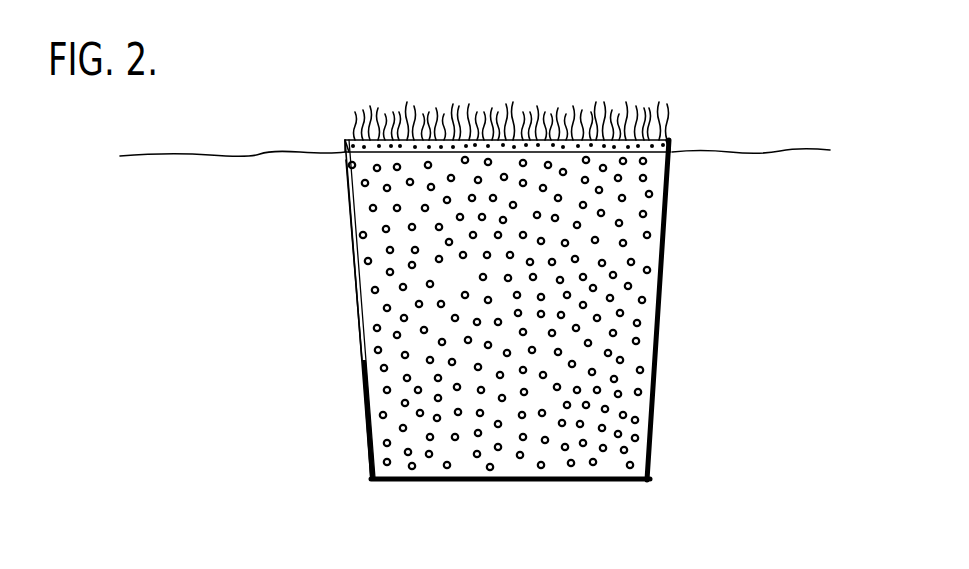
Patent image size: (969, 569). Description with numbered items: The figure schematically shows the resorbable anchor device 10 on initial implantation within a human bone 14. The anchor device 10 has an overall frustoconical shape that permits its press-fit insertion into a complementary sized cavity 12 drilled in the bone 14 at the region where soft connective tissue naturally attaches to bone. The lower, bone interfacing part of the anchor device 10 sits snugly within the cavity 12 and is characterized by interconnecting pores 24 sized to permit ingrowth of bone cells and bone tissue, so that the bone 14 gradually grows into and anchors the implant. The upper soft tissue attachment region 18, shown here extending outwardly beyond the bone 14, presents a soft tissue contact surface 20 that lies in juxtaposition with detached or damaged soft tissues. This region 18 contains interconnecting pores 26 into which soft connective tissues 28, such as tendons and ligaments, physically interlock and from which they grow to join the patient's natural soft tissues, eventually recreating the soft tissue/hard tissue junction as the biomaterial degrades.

The anchor device 10 is at (677, 327).
The cavity 12 is at (668, 200).
The bone 14 is at (520, 541).
The soft tissue attachment region 18 is at (346, 142).
The soft tissue contact surface 20 is at (668, 136).
The interconnecting pores 24 is at (370, 370).
The interconnecting pores 26 is at (550, 140).
The soft connective tissues 28 is at (415, 135).